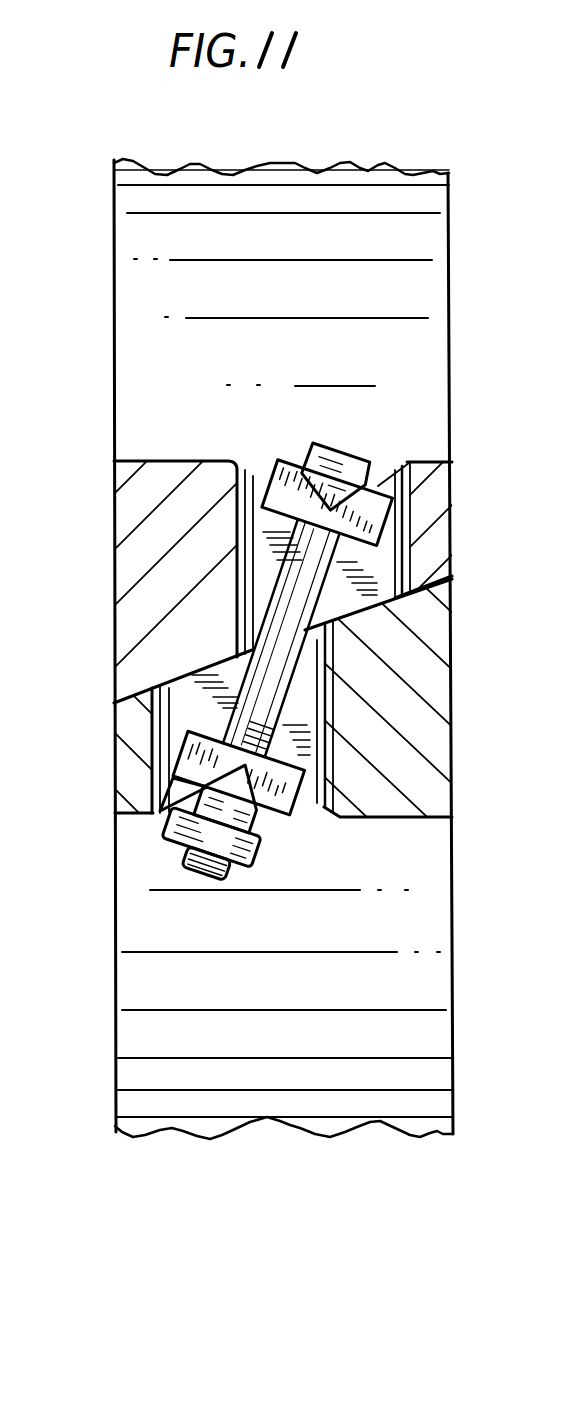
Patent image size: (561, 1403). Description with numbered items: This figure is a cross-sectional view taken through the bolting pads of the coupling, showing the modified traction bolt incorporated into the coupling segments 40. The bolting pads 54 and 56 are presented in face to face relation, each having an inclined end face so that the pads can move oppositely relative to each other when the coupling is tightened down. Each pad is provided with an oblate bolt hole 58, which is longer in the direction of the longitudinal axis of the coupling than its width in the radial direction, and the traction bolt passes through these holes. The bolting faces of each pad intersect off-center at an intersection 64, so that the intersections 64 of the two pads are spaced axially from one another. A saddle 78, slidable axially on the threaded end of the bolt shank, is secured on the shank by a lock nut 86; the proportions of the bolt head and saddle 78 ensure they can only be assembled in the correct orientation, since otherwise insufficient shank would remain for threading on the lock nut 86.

The coupling segment 40 is at (431, 243).
The bolting pad 54 is at (436, 548).
The bolting pad 56 is at (432, 740).
The oblate bolt hole 58 is at (260, 584).
The intersection of bolting faces 64 is at (320, 483).
The saddle 78 is at (176, 796).
The lock nut 86 is at (176, 852).